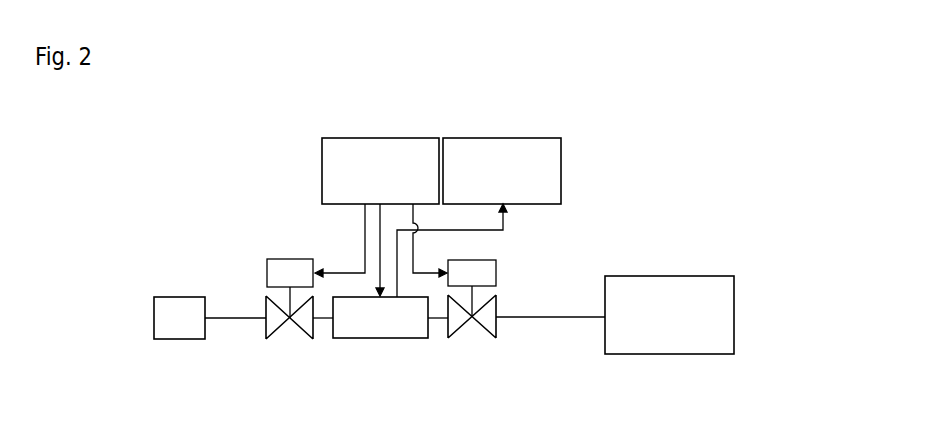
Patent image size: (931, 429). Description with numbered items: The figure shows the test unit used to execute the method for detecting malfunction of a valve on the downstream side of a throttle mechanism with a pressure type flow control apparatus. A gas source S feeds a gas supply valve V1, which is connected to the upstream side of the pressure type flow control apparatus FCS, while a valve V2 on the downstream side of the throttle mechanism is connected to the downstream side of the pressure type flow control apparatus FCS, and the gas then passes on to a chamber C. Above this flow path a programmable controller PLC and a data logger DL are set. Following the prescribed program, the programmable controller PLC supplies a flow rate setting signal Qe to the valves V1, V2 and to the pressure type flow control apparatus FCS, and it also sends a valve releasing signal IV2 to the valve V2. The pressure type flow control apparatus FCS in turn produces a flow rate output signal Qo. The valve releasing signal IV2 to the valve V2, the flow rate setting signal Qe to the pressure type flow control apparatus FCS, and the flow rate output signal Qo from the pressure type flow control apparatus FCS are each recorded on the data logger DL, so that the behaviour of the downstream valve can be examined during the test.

The programmable controller PLC is at (381, 136).
The data logger DL is at (500, 136).
The gas source S is at (183, 295).
The gas supply valve V1 is at (283, 326).
The valve on the downstream side of the throttle mechanism V2 is at (463, 327).
The pressure type flow control apparatus FCS is at (380, 317).
The chamber C is at (735, 310).
The flow rate setting signal Qe is at (378, 288).
The flow rate output signal Qo is at (506, 211).
The valve releasing signal IV2 is at (430, 271).